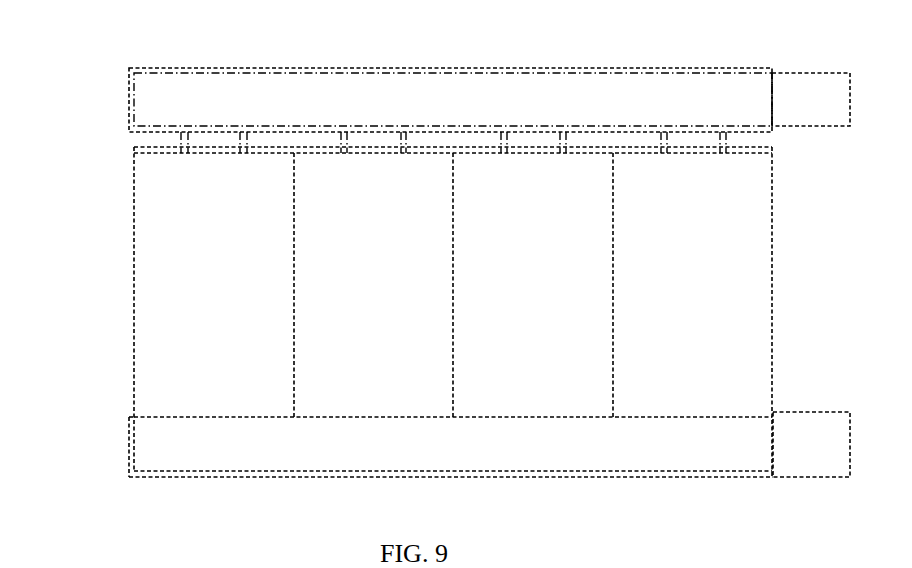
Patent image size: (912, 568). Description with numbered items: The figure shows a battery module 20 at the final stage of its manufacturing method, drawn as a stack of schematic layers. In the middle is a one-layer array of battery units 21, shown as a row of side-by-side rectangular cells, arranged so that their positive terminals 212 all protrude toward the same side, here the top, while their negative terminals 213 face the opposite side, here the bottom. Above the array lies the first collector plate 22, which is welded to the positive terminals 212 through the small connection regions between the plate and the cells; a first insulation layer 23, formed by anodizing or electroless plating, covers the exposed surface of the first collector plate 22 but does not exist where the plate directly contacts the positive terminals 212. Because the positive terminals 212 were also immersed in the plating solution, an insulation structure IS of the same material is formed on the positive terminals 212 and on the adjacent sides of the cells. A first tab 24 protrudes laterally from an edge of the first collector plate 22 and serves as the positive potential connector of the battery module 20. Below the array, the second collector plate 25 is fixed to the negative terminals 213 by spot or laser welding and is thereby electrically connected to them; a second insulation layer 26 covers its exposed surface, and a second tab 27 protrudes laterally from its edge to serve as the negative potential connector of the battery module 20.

The battery module 20 is at (57, 49).
The battery units 21 is at (110, 294).
The positive terminals 212 is at (697, 140).
The negative terminals 213 is at (693, 417).
The first collector plate 22 is at (717, 82).
The first insulation layer 23 is at (133, 85).
The first tab 24 is at (811, 82).
The second collector plate 25 is at (620, 460).
The second insulation layer 26 is at (133, 460).
The second tab 27 is at (838, 445).
The insulation structure IS is at (723, 139).